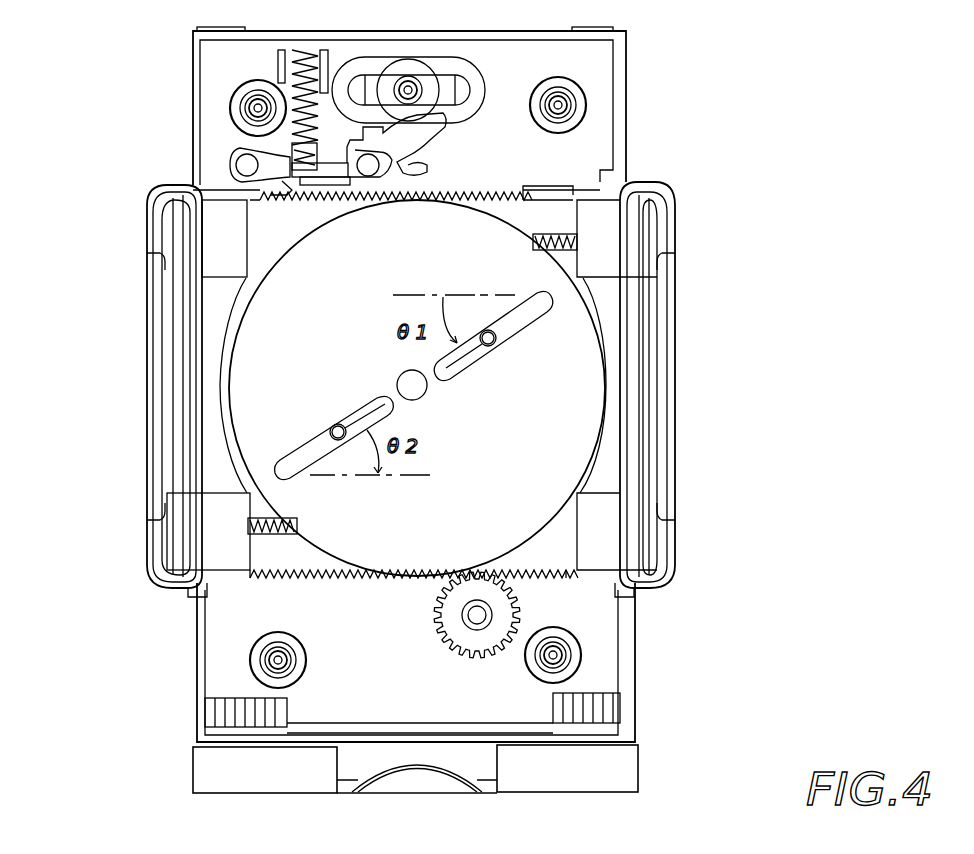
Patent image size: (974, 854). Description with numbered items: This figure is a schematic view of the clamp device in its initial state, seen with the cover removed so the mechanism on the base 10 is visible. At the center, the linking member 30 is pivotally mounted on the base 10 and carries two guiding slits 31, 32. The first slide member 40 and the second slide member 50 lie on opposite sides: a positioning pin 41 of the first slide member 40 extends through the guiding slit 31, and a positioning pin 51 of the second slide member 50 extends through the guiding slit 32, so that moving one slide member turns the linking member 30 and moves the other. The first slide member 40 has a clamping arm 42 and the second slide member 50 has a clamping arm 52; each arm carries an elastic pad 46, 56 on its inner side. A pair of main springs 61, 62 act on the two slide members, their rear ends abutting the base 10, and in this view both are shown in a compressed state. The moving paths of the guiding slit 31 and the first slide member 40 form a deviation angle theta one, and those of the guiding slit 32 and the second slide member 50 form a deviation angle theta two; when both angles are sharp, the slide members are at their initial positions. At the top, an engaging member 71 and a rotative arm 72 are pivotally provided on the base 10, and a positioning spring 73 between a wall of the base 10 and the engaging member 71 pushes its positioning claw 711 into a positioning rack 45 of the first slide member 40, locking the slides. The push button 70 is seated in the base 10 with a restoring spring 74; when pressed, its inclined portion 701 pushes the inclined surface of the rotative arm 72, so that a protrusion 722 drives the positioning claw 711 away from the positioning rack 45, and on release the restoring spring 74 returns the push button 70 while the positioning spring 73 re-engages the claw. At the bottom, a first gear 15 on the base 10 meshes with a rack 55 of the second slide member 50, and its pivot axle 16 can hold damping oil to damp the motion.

The base 10 is at (630, 660).
The first gear 15 is at (433, 607).
The pivot axle 16 is at (475, 627).
The linking member 30 is at (565, 415).
The guiding slit 31 is at (532, 315).
The guiding slit 32 is at (290, 460).
The first slide member 40 is at (147, 222).
The positioning pin 41 is at (491, 343).
The clamping arm 42 is at (190, 362).
The positioning rack 45 is at (505, 188).
The elastic pad 46 is at (215, 510).
The second slide member 50 is at (675, 538).
The positioning pin 51 is at (336, 425).
The clamping arm 52 is at (640, 390).
The rack 55 is at (545, 578).
The elastic pad 56 is at (600, 240).
The main spring 61 is at (560, 192).
The main spring 62 is at (277, 545).
The push button 70 is at (462, 80).
The engaging member 71 is at (240, 160).
The rotative arm 72 is at (432, 124).
The positioning spring 73 is at (287, 73).
The restoring spring 74 is at (437, 93).
The inclined portion 701 is at (400, 173).
The positioning claw 711 is at (294, 200).
The protrusion 722 is at (335, 165).